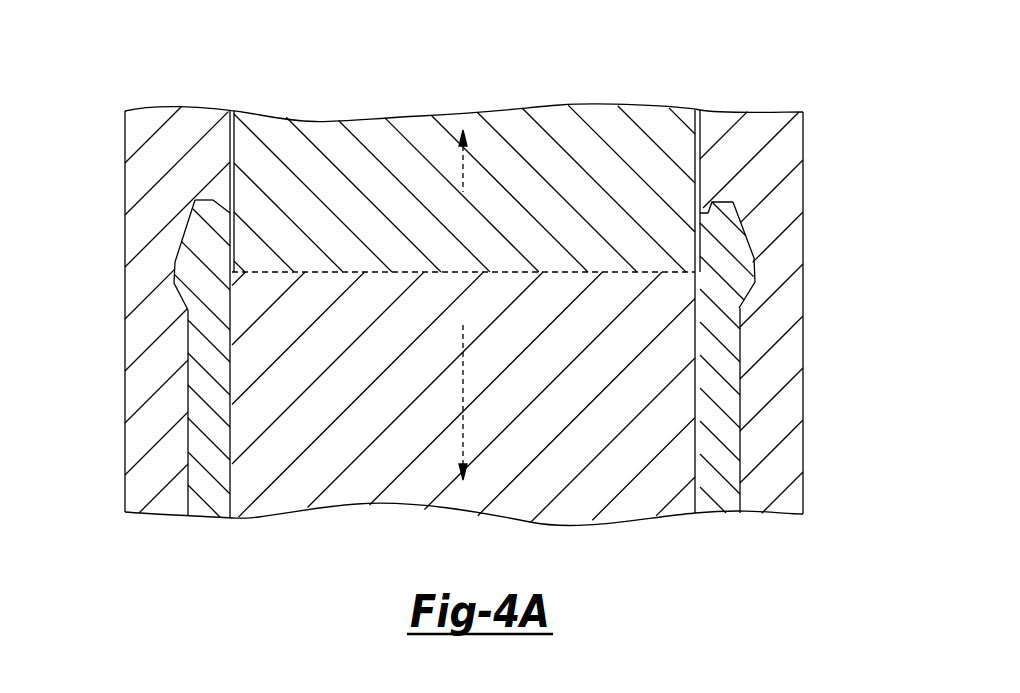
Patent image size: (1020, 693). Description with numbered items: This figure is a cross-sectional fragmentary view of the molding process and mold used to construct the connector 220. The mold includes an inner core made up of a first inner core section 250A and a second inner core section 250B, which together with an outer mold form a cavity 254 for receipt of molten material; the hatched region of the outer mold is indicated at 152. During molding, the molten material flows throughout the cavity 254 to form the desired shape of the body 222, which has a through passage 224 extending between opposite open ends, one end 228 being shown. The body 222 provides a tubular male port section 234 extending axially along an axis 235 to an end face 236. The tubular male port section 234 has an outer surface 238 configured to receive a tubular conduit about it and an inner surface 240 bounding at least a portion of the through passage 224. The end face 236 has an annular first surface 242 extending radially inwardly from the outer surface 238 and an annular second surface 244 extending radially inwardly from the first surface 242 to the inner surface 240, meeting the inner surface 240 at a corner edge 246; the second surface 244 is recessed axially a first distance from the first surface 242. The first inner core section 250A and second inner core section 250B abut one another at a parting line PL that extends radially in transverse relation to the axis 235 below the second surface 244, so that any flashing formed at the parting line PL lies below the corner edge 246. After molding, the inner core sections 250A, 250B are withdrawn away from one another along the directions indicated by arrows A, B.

The mold body 152 is at (147, 224).
The connector 220 is at (771, 201).
The body 222 is at (720, 405).
The through passage 224 is at (623, 320).
The open end 228 is at (718, 196).
The tubular male port section 234 is at (160, 413).
The axis 235 is at (463, 325).
The end face 236 is at (699, 189).
The outer surface 238 is at (754, 470).
The inner surface 240 is at (681, 465).
The annular first surface 242 is at (203, 188).
The annular second surface 244 is at (226, 192).
The corner edge 246 is at (232, 213).
The first inner core section 250A is at (388, 132).
The second inner core section 250B is at (318, 487).
The cavity 254 is at (217, 391).
The arrow A is at (462, 170).
The arrow B is at (462, 443).
The parting line PL is at (520, 272).